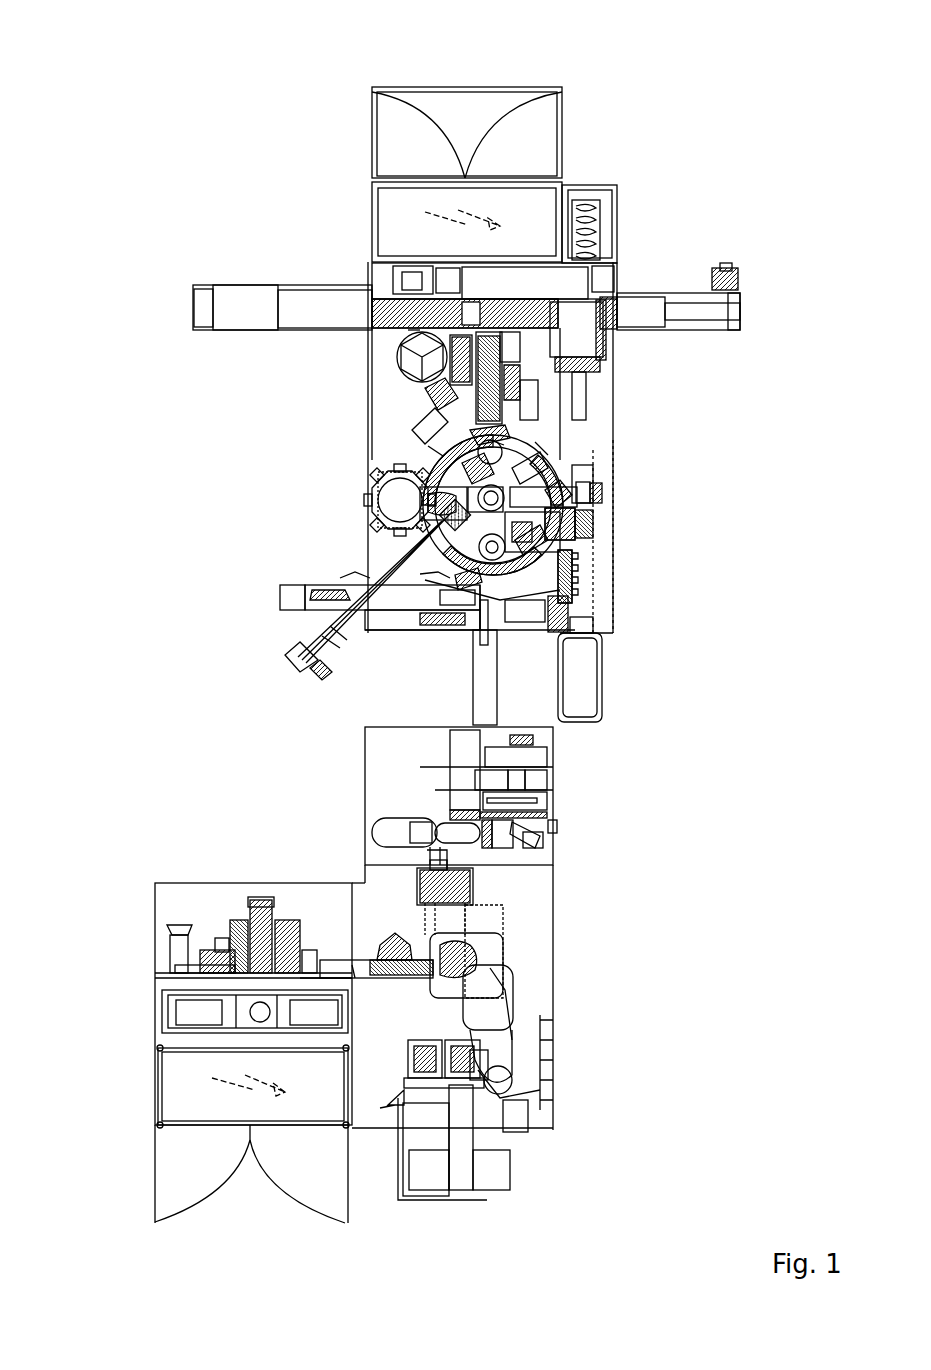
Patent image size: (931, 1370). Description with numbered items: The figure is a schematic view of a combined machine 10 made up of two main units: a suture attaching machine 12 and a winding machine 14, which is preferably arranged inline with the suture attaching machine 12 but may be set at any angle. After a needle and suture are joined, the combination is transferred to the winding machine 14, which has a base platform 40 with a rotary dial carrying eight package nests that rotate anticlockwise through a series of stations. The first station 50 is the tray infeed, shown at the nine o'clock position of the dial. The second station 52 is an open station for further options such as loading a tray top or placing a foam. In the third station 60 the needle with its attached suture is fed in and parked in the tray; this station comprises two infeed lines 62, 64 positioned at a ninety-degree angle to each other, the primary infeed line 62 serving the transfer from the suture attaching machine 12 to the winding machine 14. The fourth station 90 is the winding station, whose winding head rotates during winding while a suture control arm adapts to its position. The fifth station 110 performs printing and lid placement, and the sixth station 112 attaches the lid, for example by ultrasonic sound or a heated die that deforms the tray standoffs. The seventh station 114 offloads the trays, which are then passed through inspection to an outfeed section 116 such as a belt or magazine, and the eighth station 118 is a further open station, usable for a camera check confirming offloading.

The combined machine 10 is at (98, 85).
The suture attaching machine 12 is at (122, 863).
The winding machine 14 is at (122, 430).
The base platform 40 is at (565, 478).
The first station 50 is at (430, 497).
The second station 52 is at (440, 534).
The third station 60 is at (565, 575).
The primary infeed line 62 is at (490, 668).
The infeed line 64 is at (345, 585).
The fourth station 90 is at (565, 547).
The fifth station 110 is at (565, 507).
The sixth station 112 is at (542, 448).
The seventh station 114 is at (497, 445).
The outfeed section 116 is at (414, 335).
The eighth station 118 is at (435, 452).